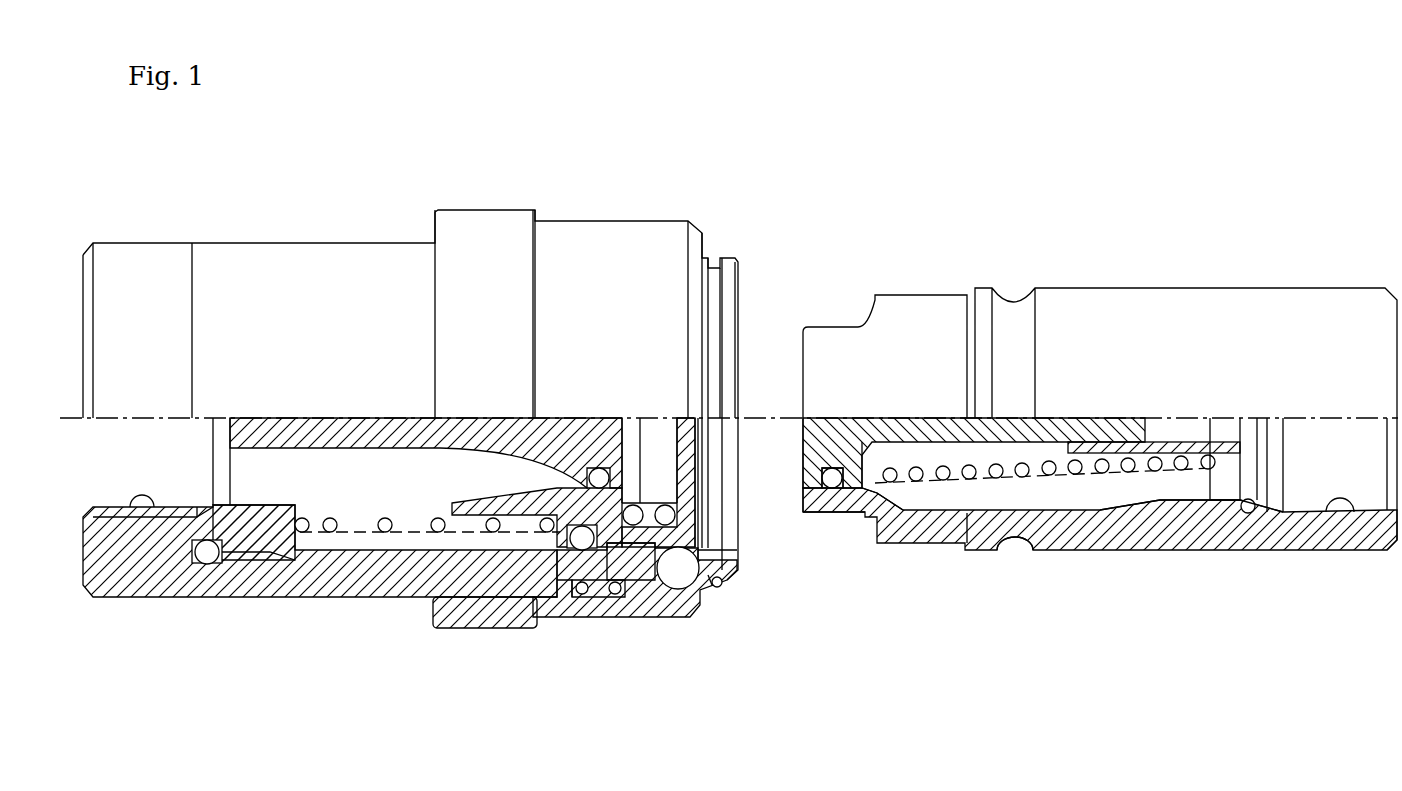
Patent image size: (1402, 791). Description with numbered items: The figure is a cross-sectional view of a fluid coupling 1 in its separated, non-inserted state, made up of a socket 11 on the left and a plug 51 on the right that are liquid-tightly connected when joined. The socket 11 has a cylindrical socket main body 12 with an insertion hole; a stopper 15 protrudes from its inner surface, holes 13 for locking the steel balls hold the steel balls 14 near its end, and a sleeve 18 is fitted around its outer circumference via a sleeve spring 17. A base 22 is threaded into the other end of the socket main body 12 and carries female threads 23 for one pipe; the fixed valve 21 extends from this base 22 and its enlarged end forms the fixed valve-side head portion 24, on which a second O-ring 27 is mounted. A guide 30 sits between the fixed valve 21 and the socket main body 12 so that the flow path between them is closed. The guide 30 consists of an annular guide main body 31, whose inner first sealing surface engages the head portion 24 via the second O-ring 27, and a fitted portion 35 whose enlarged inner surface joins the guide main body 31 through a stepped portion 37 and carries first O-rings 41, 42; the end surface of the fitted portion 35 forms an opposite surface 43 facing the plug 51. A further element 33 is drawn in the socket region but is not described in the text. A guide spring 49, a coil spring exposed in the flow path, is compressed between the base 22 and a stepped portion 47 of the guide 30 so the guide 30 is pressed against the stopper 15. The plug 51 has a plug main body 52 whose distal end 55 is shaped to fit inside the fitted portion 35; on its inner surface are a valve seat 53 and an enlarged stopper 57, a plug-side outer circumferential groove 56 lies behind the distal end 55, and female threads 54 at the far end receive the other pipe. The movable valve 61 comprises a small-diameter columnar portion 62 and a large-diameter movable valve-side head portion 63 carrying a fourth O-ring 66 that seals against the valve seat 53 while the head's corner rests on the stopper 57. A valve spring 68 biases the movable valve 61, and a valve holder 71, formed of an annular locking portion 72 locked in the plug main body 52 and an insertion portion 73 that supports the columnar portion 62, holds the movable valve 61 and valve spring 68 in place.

The fluid coupling 1 is at (755, 101).
The socket 11 is at (290, 243).
The socket main body 12 is at (310, 597).
The holes for locking the steel balls 13 is at (676, 617).
The steel balls 14 is at (712, 592).
The stopper 15 is at (596, 597).
The sleeve spring 17 is at (578, 600).
The sleeve 18 is at (463, 630).
The fixed valve 21 is at (352, 455).
The base 22 is at (236, 552).
The female threads 23 is at (146, 512).
The fixed valve-side head portion 24 is at (633, 488).
The second O-ring 27 is at (598, 466).
The guide 30 is at (637, 598).
The guide main body 31 is at (612, 597).
The ball 33 is at (572, 597).
The fitted portion 35 is at (692, 523).
The stepped portion 37 is at (650, 500).
The first O-ring 41 is at (677, 503).
The first O-ring 42 is at (673, 505).
The opposite surface 43 is at (692, 577).
The stepped portion 47 is at (556, 597).
The guide spring 49 is at (392, 540).
The plug 51 is at (1155, 290).
The plug main body 52 is at (1085, 550).
The valve seat 53 is at (812, 485).
The female threads 54 is at (1340, 512).
The distal end 55 is at (856, 517).
The plug-side outer circumferential groove 56 is at (1010, 548).
The stopper 57 is at (843, 495).
The movable valve 61 is at (962, 450).
The columnar portion 62 is at (1040, 548).
The movable valve-side head portion 63 is at (862, 500).
The fourth O-ring 66 is at (832, 490).
The valve spring 68 is at (1128, 455).
The valve holder 71 is at (1205, 624).
The locking portion 72 is at (1245, 510).
The insertion portion 73 is at (1165, 505).